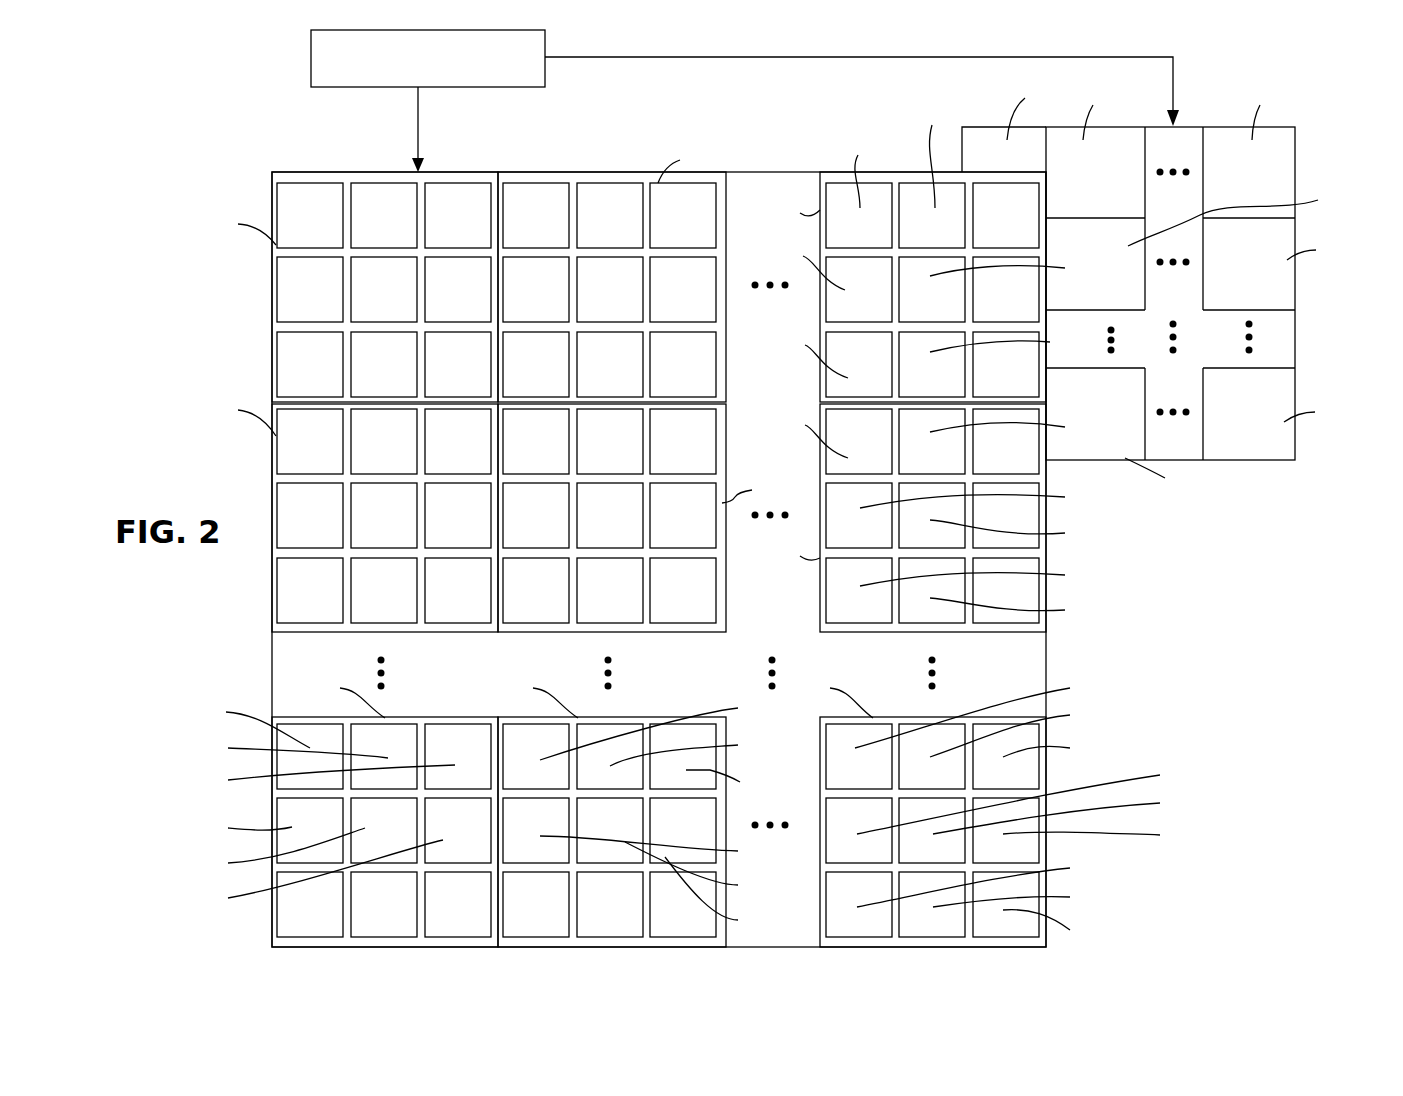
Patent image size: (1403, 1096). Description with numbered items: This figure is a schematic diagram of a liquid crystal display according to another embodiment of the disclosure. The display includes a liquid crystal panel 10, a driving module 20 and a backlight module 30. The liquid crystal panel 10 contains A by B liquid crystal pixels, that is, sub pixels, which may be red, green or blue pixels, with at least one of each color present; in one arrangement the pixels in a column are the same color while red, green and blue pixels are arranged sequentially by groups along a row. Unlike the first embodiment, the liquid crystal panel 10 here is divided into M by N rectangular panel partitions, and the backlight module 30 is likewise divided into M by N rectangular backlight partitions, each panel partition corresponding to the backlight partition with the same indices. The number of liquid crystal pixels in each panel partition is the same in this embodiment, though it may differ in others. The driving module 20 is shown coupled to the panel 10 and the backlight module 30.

The liquid crystal panel 10 is at (297, 172).
The driving module 20 is at (477, 88).
The backlight module 30 is at (1297, 342).